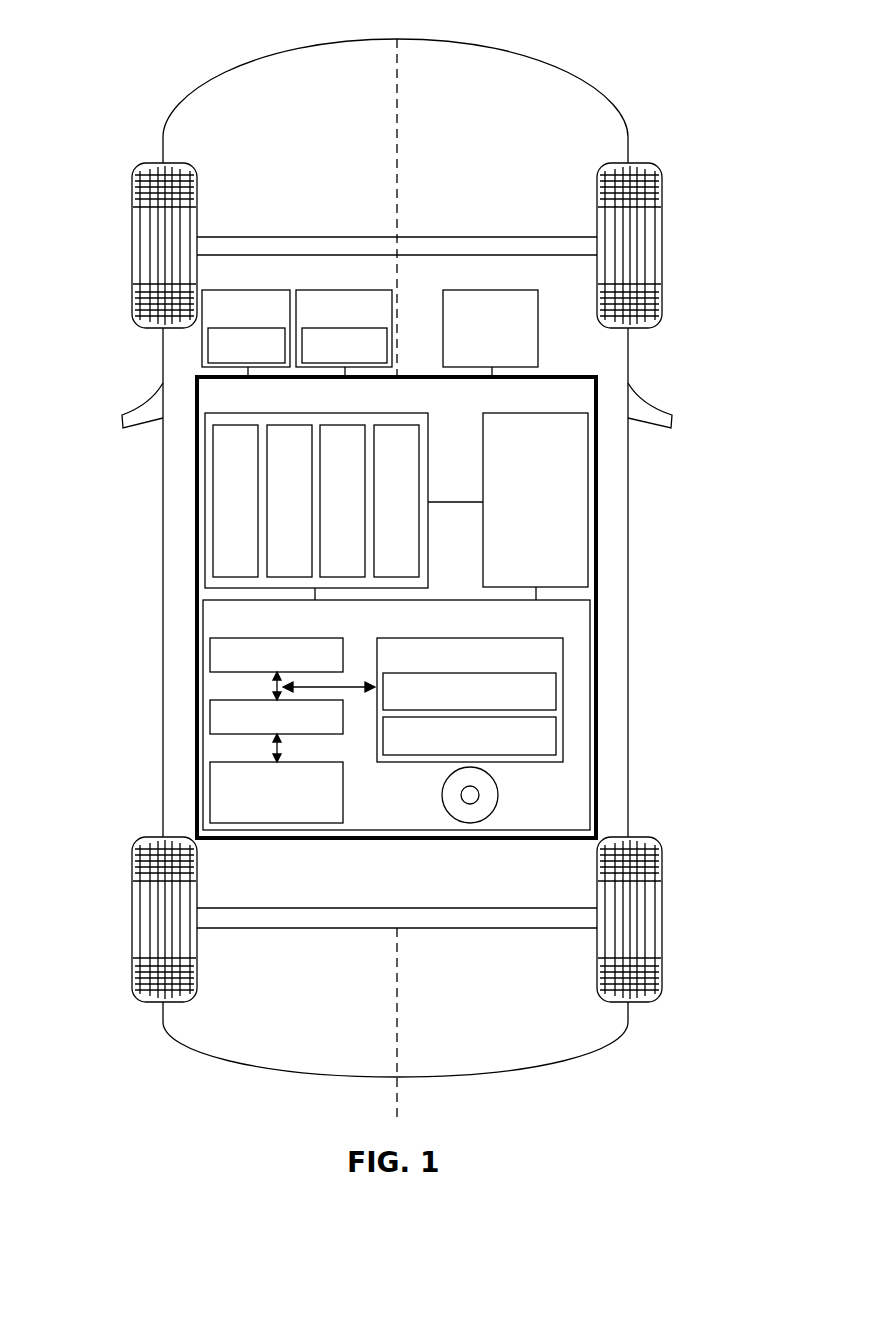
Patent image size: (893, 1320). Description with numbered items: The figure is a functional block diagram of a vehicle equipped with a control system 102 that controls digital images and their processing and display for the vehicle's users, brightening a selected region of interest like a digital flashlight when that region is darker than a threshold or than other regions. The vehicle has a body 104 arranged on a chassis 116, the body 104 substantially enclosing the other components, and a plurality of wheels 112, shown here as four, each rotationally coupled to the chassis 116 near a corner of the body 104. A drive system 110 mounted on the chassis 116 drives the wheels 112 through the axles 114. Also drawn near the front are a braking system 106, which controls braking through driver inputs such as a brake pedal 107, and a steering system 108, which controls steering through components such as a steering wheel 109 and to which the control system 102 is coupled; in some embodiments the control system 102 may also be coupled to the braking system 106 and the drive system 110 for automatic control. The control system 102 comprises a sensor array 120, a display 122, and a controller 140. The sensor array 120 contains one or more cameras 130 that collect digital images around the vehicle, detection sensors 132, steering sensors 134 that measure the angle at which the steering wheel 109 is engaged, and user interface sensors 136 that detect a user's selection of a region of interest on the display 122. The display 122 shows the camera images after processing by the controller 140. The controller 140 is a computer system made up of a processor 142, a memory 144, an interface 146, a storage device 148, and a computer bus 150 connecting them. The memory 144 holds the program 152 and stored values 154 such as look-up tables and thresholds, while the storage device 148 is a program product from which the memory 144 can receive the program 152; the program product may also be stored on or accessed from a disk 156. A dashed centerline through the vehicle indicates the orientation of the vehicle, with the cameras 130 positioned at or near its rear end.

The control system 102 is at (545, 377).
The body 104 is at (163, 432).
The braking system 106 is at (268, 290).
The brake pedal 107 is at (208, 347).
The steering system 108 is at (358, 290).
The steering wheel 109 is at (390, 345).
The drive system 110 is at (492, 290).
The wheels 112 is at (132, 230).
The axles 114 is at (287, 242).
The chassis 116 is at (399, 92).
The sensor array 120 is at (270, 413).
The display 122 is at (523, 413).
The cameras 130 is at (398, 1097).
The detection sensors 132 is at (267, 565).
The steering sensors 134 is at (365, 552).
The user interface sensors 136 is at (419, 433).
The controller 140 is at (203, 613).
The processor 142 is at (210, 658).
The memory 144 is at (563, 645).
The interface 146 is at (210, 722).
The storage device 148 is at (343, 800).
The computer bus 150 is at (267, 687).
The program 152 is at (556, 695).
The stored values 154 is at (556, 740).
The disk 156 is at (469, 817).